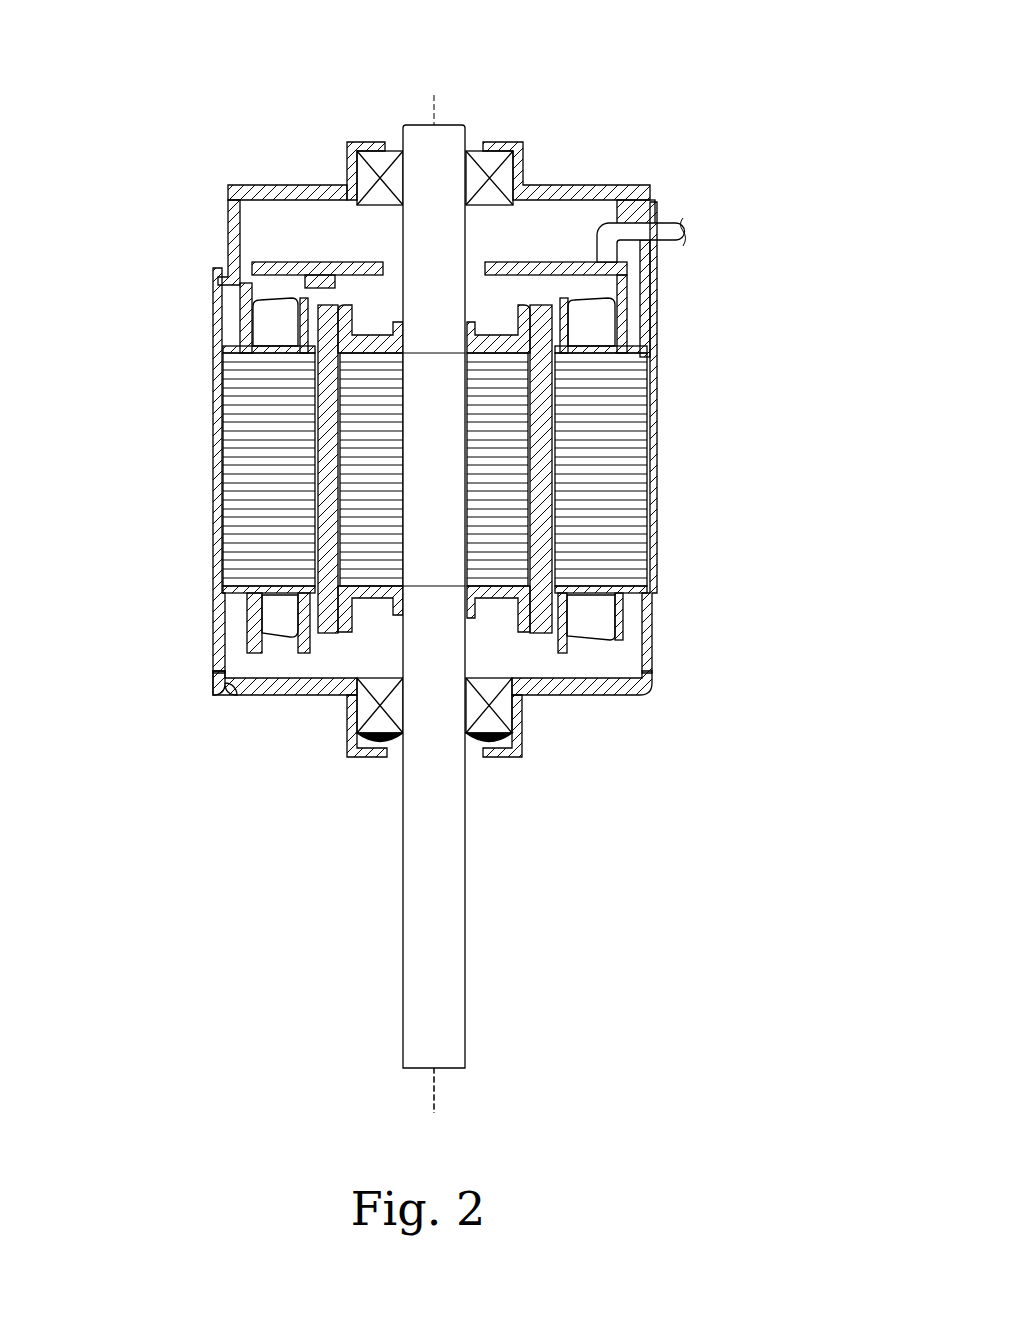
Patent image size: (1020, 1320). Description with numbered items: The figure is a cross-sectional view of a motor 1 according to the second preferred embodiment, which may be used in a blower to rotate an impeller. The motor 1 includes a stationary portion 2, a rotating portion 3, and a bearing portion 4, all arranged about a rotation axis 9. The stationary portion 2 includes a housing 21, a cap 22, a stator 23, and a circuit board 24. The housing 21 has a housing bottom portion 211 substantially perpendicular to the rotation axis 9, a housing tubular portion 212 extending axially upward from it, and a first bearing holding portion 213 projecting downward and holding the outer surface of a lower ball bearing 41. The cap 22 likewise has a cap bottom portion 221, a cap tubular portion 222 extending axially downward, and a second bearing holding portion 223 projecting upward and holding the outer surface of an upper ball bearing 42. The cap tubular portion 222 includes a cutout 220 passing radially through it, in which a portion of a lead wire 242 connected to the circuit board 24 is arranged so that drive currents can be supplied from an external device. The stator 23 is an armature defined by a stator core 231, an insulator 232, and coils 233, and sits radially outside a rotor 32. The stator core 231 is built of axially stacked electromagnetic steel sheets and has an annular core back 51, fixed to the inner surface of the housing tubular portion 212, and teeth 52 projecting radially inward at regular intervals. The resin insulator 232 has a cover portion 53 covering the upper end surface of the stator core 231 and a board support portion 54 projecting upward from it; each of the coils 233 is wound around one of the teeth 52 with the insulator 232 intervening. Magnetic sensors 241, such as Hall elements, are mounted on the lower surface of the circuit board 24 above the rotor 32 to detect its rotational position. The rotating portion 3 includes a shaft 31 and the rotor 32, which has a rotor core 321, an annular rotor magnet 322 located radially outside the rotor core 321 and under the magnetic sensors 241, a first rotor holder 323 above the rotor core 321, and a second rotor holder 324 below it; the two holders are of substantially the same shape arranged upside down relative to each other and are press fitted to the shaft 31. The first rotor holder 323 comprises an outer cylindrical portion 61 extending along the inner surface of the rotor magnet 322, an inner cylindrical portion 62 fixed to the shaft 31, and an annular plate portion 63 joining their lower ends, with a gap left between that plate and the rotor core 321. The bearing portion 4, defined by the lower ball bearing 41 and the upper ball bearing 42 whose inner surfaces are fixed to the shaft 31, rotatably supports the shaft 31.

The motor 1 is at (632, 104).
The stationary portion 2 is at (624, 740).
The rotating portion 3 is at (389, 650).
The bearing portion 4 is at (478, 762).
The rotation axis 9 is at (437, 1090).
The housing 21 is at (155, 786).
The housing bottom portion 211 is at (266, 697).
The housing tubular portion 212 is at (214, 566).
The first bearing holding portion 213 is at (346, 726).
The cap 22 is at (330, 106).
The cap bottom portion 221 is at (276, 186).
The cap tubular portion 222 is at (230, 236).
The second bearing holding portion 223 is at (346, 168).
The cutout 220 is at (654, 199).
The stator 23 is at (111, 312).
The stator core 231 is at (158, 420).
The core back 51 is at (242, 412).
The teeth 52 is at (266, 433).
The insulator 232 is at (158, 350).
The cover portion 53 is at (262, 350).
The board support portion 54 is at (246, 338).
The coils 233 is at (270, 313).
The circuit board 24 is at (535, 272).
The magnetic sensors 241 is at (318, 277).
The lead wire 242 is at (602, 236).
The shaft 31 is at (456, 880).
The rotor 32 is at (756, 535).
The rotor core 321 is at (505, 478).
The rotor magnet 322 is at (543, 522).
The first rotor holder 323 is at (704, 352).
The outer cylindrical portion 61 is at (470, 330).
The inner cylindrical portion 62 is at (540, 392).
The annular plate portion 63 is at (520, 386).
The second rotor holder 324 is at (560, 592).
The lower ball bearing 41 is at (512, 756).
The upper ball bearing 42 is at (492, 160).